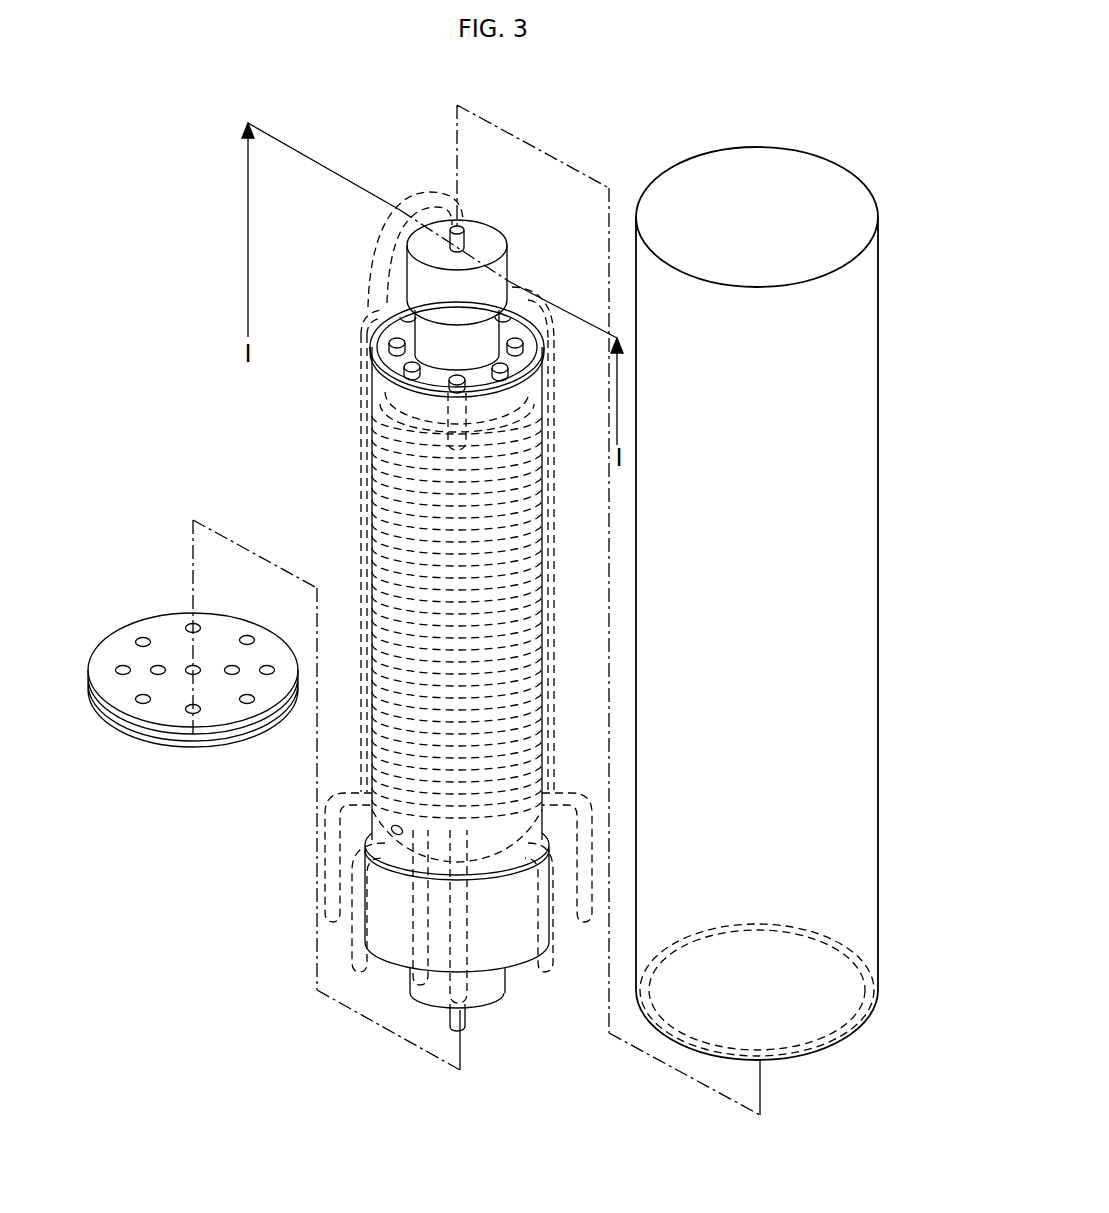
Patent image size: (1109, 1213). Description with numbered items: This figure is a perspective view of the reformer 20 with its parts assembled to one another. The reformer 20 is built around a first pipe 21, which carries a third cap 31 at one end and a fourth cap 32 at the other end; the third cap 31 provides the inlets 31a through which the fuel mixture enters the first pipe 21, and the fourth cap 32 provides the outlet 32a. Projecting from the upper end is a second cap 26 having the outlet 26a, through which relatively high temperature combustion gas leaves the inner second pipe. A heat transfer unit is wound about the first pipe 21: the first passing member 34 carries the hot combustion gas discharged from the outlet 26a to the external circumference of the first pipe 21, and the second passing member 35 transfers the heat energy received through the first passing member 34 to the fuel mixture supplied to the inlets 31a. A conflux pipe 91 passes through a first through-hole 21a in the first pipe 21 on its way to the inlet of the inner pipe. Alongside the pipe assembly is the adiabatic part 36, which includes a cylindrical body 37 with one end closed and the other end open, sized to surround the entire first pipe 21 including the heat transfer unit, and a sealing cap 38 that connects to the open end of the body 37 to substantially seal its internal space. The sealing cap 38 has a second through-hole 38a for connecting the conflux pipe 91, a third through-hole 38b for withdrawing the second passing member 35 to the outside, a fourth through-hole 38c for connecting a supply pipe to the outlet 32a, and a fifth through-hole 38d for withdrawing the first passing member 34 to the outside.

The reformer 20 is at (883, 108).
The first pipe 21 is at (548, 608).
The first through-hole 21a is at (392, 827).
The second cap 26 is at (507, 270).
The outlet 26a is at (464, 238).
The third cap 31 is at (432, 383).
The inlets 31a is at (508, 384).
The fourth cap 32 is at (487, 946).
The outlet 32a is at (465, 1020).
The first passing member 34 is at (378, 248).
The second passing member 35 is at (360, 523).
The adiabatic part 36 is at (890, 722).
The cylindrical body 37 is at (880, 604).
The sealing cap 38 is at (172, 632).
The second through-hole 38a is at (158, 678).
The third through-hole 38b is at (123, 678).
The fourth through-hole 38c is at (193, 678).
The fifth through-hole 38d is at (232, 678).
The conflux pipe 91 is at (352, 935).